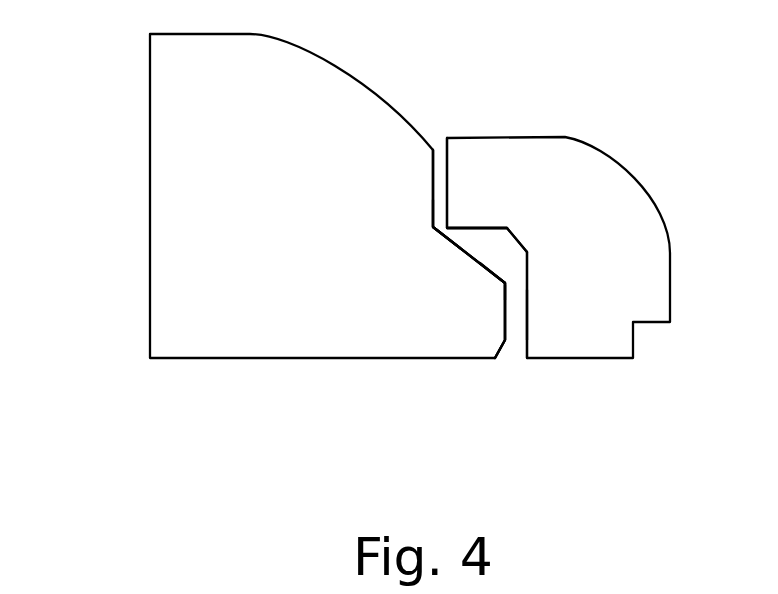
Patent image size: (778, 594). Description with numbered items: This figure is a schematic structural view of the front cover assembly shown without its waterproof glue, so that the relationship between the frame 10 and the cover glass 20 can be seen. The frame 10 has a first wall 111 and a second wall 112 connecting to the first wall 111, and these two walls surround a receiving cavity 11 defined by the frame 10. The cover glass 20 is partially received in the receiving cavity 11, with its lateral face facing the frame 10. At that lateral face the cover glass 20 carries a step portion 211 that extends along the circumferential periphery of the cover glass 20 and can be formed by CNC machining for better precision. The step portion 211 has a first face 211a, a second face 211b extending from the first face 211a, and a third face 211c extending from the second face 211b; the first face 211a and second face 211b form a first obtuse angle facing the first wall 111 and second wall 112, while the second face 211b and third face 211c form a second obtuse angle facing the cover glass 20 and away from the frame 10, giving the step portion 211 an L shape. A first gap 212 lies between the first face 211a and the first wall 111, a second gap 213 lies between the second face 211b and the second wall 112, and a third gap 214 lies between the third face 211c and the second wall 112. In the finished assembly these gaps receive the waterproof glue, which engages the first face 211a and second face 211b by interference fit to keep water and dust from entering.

The frame 10 is at (618, 273).
The receiving cavity 11 is at (497, 246).
The first wall 111 is at (484, 232).
The second wall 112 is at (528, 303).
The cover glass 20 is at (173, 200).
The step portion 211 is at (492, 417).
The first face 211a is at (447, 243).
The second face 211b is at (486, 277).
The third face 211c is at (502, 311).
The first gap 212 is at (456, 240).
The second gap 213 is at (513, 268).
The third gap 214 is at (512, 288).